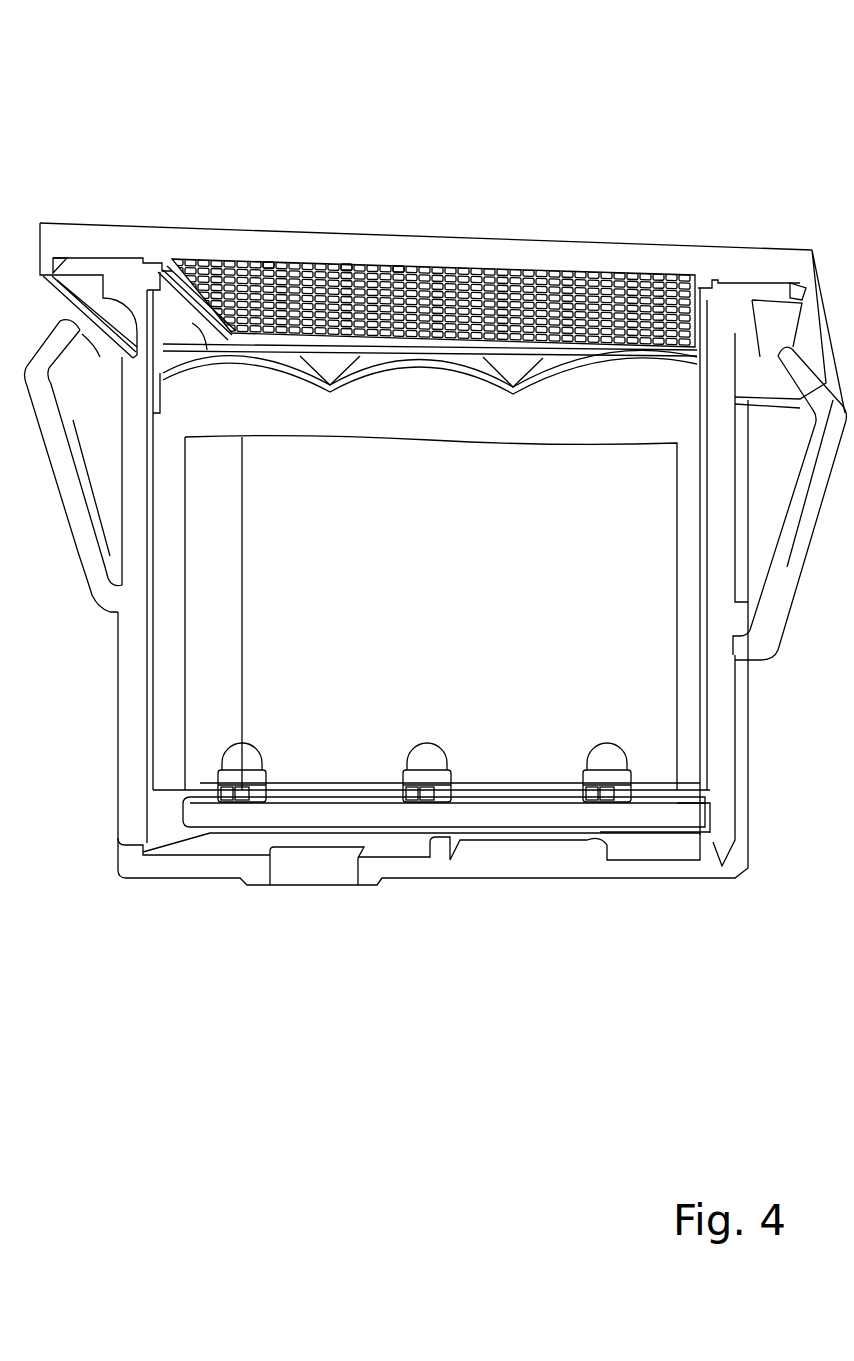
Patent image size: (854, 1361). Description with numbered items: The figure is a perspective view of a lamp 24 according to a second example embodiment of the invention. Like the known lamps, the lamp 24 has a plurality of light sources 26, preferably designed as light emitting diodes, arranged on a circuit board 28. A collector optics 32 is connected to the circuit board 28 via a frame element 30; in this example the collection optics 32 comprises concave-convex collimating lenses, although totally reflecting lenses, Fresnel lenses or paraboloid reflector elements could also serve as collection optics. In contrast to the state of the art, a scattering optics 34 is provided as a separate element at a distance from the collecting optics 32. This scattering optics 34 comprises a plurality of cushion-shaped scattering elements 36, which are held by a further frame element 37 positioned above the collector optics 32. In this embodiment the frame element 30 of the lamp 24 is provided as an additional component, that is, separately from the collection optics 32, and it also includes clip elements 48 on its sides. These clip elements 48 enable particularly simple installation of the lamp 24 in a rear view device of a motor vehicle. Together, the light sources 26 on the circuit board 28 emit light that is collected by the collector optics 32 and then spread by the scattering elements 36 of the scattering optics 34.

The lamp 24 is at (648, 95).
The light sources 26 is at (243, 755).
The circuit board 28 is at (458, 817).
The frame element 30 is at (715, 752).
The collector optics 32 is at (418, 388).
The scattering optics 34 is at (460, 258).
The cushion-shaped scattering elements 36 is at (263, 262).
The further frame element 37 is at (762, 258).
The clip elements 48 is at (78, 556).